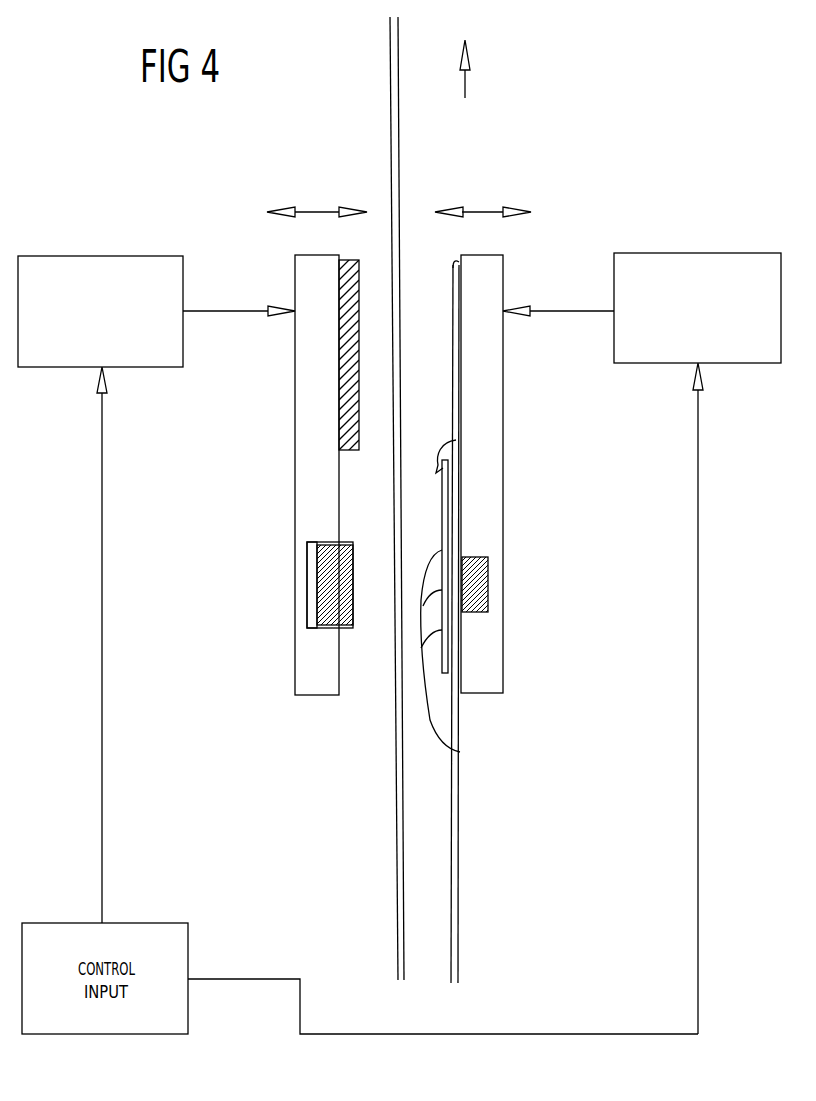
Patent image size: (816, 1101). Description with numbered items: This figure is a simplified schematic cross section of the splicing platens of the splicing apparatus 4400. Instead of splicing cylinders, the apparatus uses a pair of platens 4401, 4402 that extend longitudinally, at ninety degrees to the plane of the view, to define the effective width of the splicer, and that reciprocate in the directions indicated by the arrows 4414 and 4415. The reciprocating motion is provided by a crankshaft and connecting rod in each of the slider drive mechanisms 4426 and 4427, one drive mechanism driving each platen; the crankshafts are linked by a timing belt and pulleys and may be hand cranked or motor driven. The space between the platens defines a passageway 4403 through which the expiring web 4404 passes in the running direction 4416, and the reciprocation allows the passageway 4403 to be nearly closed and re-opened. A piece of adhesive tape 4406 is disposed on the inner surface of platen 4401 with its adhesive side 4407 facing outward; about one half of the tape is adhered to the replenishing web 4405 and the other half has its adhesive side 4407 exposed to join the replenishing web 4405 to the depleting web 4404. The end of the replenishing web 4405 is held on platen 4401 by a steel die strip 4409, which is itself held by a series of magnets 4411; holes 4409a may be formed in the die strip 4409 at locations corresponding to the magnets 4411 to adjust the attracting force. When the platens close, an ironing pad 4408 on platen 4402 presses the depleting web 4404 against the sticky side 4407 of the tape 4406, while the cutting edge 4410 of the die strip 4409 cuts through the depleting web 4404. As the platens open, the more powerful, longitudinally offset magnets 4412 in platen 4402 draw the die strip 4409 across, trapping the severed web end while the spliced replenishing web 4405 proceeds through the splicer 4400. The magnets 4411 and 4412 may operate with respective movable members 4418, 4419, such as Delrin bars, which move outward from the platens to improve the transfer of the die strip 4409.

The splicing apparatus 4400 is at (627, 121).
The platen 4401 is at (521, 689).
The platen 4402 is at (276, 684).
The passageway 4403 is at (358, 743).
The expiring web 4404 is at (398, 862).
The replenishing web 4405 is at (459, 852).
The adhesive tape 4406 is at (463, 350).
The adhesive side 4407 is at (448, 262).
The ironing pad 4408 is at (348, 258).
The die strip 4409 is at (446, 530).
The holes 4409a is at (460, 752).
The cutting edge 4410 is at (456, 440).
The magnets 4411 is at (488, 600).
The magnets 4412 is at (325, 577).
The arrow 4414 is at (481, 212).
The arrow 4415 is at (315, 212).
The running direction 4416 is at (463, 86).
The movable member 4418 is at (316, 600).
The movable member 4419 is at (488, 568).
The slider drive mechanism 4426 is at (683, 340).
The slider drive mechanism 4427 is at (88, 344).